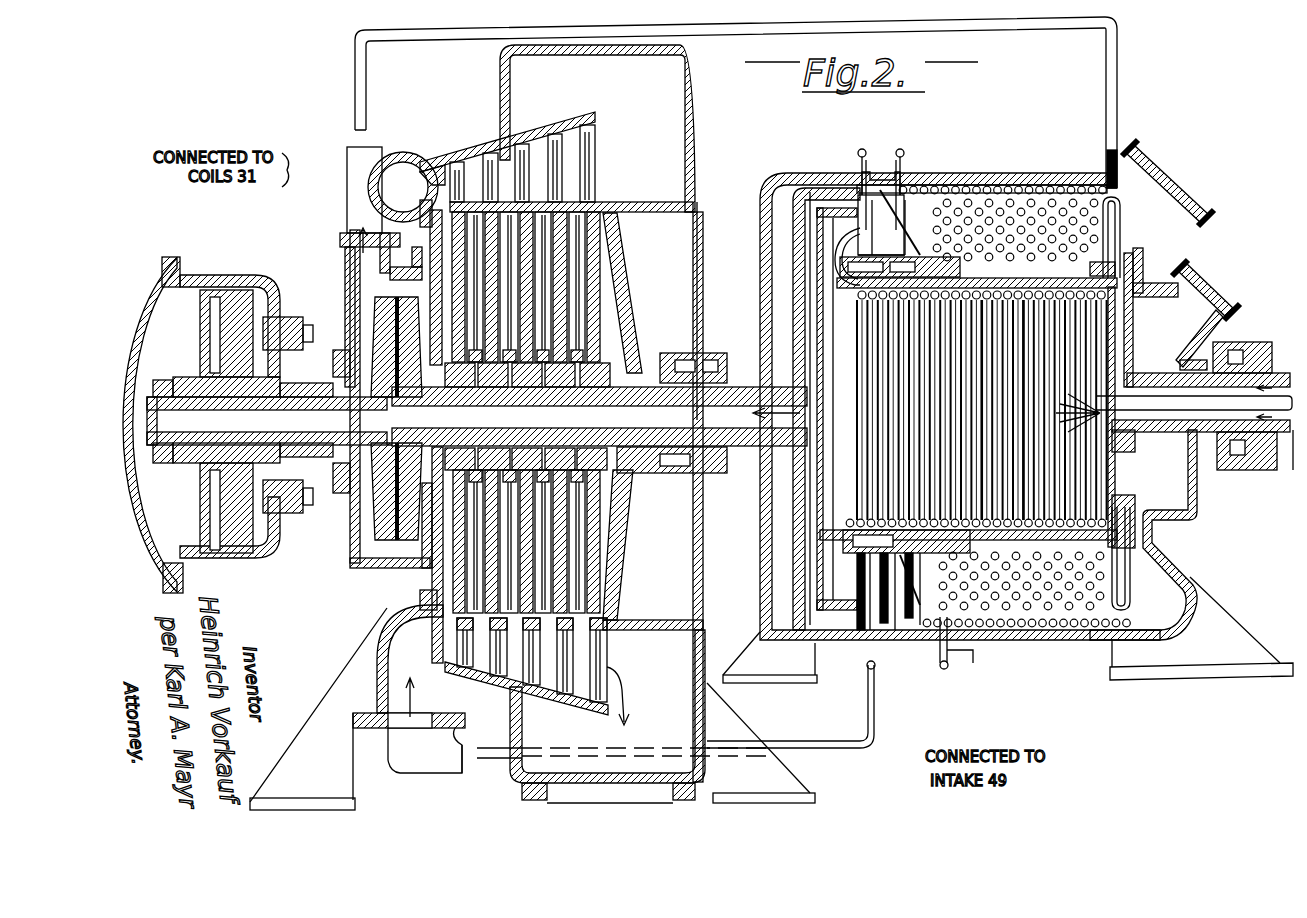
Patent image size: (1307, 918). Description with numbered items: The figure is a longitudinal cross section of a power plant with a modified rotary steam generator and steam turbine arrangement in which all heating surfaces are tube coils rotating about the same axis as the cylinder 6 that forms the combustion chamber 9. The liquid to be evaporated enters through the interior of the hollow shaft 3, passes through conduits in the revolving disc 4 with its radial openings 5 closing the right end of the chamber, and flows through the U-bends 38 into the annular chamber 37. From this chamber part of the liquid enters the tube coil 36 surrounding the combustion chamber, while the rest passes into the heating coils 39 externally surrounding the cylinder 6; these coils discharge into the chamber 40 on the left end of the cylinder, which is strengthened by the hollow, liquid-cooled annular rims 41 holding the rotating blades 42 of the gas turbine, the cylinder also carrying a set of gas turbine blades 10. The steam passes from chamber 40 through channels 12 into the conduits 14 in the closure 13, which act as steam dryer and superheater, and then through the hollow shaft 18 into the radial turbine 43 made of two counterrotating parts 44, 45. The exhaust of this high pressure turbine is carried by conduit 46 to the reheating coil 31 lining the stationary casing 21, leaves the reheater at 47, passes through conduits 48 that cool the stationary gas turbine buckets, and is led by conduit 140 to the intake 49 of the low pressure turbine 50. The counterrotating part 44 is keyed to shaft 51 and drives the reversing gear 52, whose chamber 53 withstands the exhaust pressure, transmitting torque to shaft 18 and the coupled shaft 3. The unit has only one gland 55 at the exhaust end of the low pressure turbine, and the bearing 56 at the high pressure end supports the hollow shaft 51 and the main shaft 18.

The hollow shaft 3 is at (1245, 350).
The revolving disc 4 is at (1116, 345).
The radial openings 5 is at (1128, 333).
The cylinder 6 is at (1026, 300).
The combustion chamber 9 is at (982, 410).
The blades of the gas turbine 10 is at (1122, 50).
The channels 12 is at (833, 272).
The closure 13 is at (818, 368).
The conduits 14 is at (815, 482).
The hollow shaft 18 is at (755, 470).
The stationary casing 21 is at (978, 180).
The heat absorbing tubes 31 is at (982, 185).
The tube coil 36 is at (985, 300).
The annular chamber 37 is at (1125, 266).
The U-bends 38 is at (1121, 215).
The heating coils 39 is at (1022, 212).
The chamber 40 is at (862, 300).
The annular rims 41 is at (918, 210).
The rotating blades of the gas turbine 42 is at (892, 168).
The radial turbine 43 is at (385, 560).
The counterrotating part 44 is at (385, 498).
The counterrotating part 45 is at (410, 520).
The conduit 46 is at (350, 170).
The reheater outlet 47 is at (928, 660).
The conduits 48 is at (900, 640).
The intake 49 is at (396, 722).
The low pressure turbine 50 is at (555, 574).
The shaft 51 is at (302, 385).
The reversing gear 52 is at (255, 500).
The chamber of the reversing gear 53 is at (213, 275).
The gland 55 is at (645, 380).
The bearing 56 is at (295, 462).
The conduit 140 is at (405, 766).